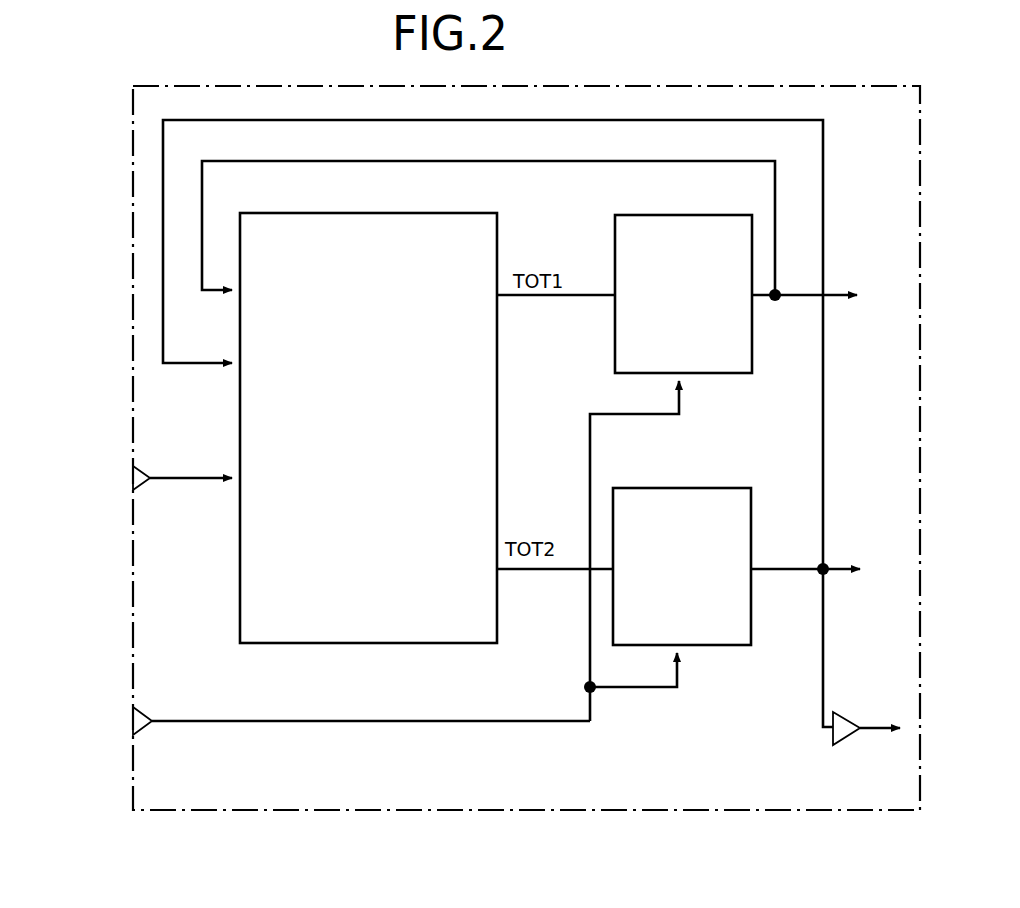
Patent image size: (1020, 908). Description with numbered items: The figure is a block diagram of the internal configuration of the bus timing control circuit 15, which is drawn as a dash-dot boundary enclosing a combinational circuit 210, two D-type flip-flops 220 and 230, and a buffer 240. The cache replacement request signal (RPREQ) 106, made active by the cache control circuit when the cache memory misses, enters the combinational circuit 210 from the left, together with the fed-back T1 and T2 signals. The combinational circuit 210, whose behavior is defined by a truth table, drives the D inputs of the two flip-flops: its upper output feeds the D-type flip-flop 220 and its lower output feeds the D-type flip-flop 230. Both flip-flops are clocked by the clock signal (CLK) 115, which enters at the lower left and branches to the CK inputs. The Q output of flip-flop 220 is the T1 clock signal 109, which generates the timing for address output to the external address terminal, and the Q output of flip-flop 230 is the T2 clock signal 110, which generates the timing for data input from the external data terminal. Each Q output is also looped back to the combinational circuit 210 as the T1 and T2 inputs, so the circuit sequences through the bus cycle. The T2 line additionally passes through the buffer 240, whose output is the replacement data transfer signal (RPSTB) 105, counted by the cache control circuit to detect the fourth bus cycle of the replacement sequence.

The bus timing control circuit 15 is at (655, 87).
The combinational circuit 210 is at (343, 213).
The D-type flip-flop 220 is at (645, 215).
The D-type flip-flop 230 is at (645, 488).
The buffer 240 is at (830, 735).
The cache replacement request signal (RPREQ) 106 is at (203, 482).
The T1 clock signal 109 is at (836, 292).
The T2 clock signal 110 is at (843, 566).
The clock signal (CLK) 115 is at (258, 722).
The replacement data transfer signal (RPSTB) 105 is at (876, 732).